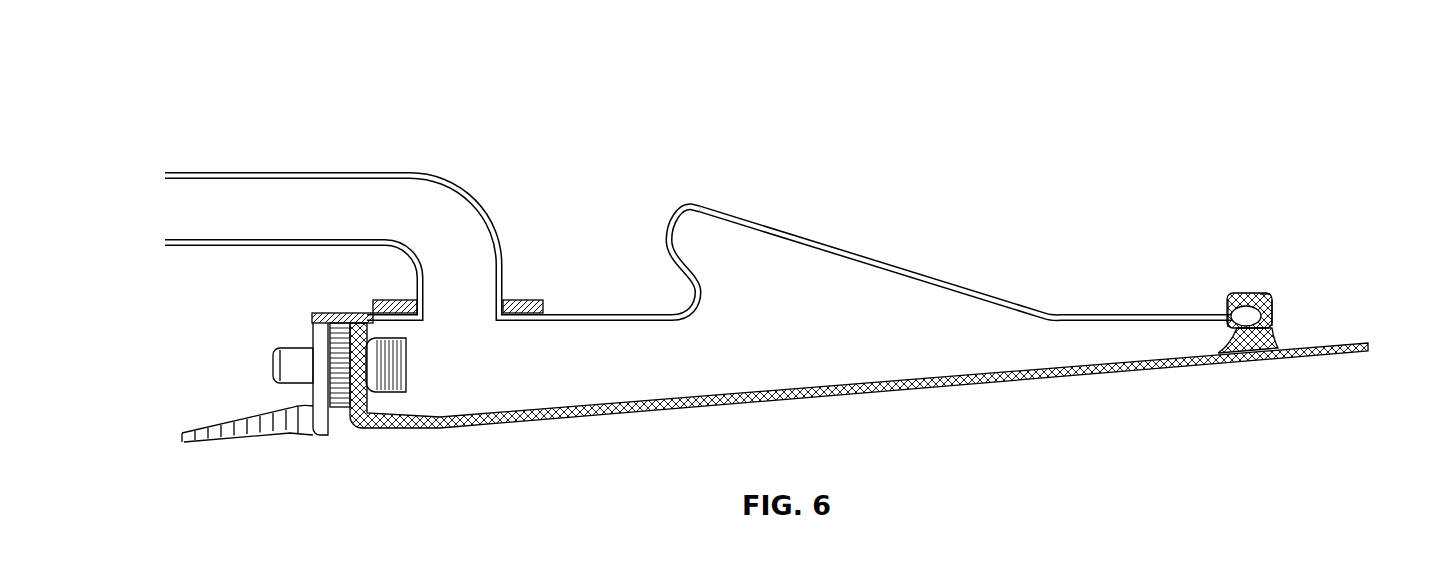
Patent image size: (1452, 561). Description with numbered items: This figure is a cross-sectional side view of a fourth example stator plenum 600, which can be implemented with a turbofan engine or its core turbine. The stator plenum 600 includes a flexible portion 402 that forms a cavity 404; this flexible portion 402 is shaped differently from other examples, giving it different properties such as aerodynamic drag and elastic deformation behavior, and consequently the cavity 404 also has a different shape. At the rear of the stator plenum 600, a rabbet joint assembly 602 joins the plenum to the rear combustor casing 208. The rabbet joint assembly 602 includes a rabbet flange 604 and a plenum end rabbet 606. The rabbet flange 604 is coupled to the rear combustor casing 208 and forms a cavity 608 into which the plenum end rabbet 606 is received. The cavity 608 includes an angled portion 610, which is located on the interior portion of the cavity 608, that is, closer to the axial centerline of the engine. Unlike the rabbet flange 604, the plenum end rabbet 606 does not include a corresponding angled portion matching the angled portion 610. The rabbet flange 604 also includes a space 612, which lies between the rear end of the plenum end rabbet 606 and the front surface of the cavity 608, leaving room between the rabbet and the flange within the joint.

The rear combustor casing 208 is at (1022, 378).
The flexible portion 402 is at (686, 201).
The cavity 404 is at (760, 270).
The fourth example stator plenum 600 is at (778, 254).
The rabbet joint assembly 602 is at (1276, 299).
The rabbet flange 604 is at (1260, 292).
The plenum end rabbet 606 is at (1228, 310).
The cavity 608 is at (1272, 313).
The angled portion 610 is at (1273, 357).
The space 612 is at (1272, 306).